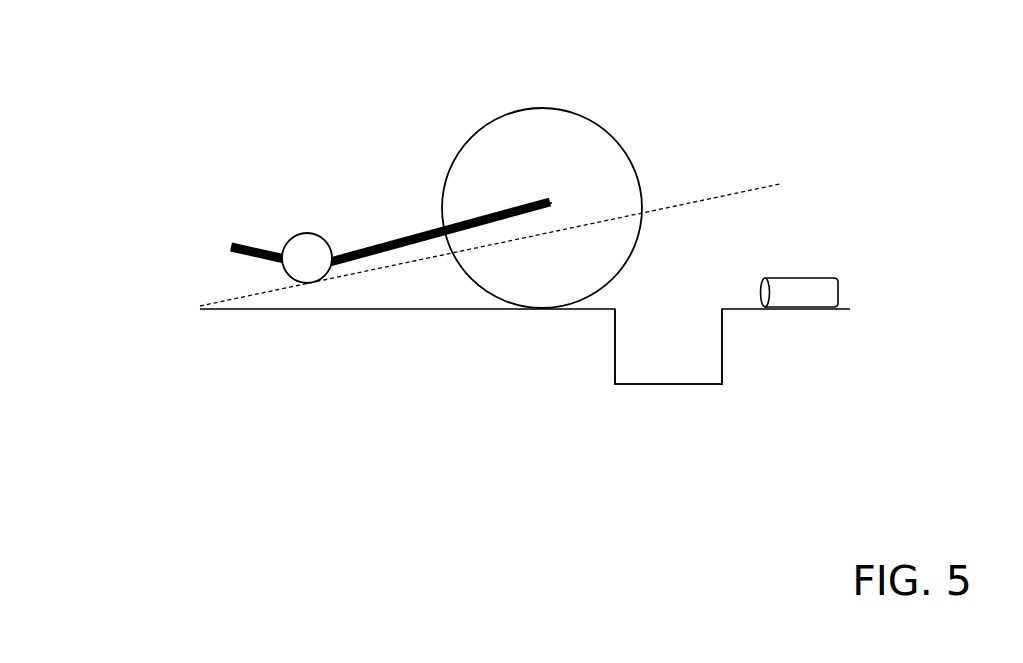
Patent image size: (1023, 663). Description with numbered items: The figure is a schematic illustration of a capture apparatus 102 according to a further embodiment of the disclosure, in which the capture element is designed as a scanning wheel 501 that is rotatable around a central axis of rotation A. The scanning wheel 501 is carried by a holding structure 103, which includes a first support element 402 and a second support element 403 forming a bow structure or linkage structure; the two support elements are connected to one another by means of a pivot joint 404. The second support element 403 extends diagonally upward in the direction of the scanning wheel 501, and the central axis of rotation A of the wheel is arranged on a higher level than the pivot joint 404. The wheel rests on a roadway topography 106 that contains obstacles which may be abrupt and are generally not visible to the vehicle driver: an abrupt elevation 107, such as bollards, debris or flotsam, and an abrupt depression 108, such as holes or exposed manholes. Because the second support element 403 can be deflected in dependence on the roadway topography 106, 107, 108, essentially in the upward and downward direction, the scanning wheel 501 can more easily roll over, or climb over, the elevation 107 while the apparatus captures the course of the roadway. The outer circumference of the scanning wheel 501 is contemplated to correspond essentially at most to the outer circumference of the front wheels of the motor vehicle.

The capture apparatus 102 is at (566, 154).
The holding structure 103 is at (344, 219).
The first support element 402 is at (238, 250).
The second support element 403 is at (397, 236).
The pivot joint 404 is at (306, 284).
The scanning wheel 501 is at (613, 175).
The roadway topography 106 is at (468, 311).
The abrupt elevation 107 is at (803, 278).
The abrupt depression 108 is at (668, 350).
The central axis of rotation A is at (553, 205).